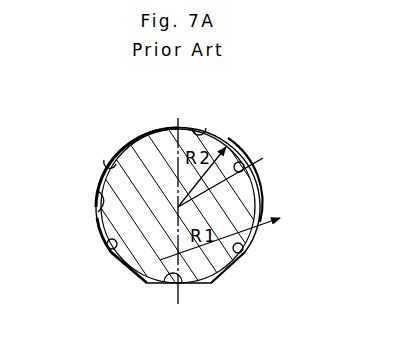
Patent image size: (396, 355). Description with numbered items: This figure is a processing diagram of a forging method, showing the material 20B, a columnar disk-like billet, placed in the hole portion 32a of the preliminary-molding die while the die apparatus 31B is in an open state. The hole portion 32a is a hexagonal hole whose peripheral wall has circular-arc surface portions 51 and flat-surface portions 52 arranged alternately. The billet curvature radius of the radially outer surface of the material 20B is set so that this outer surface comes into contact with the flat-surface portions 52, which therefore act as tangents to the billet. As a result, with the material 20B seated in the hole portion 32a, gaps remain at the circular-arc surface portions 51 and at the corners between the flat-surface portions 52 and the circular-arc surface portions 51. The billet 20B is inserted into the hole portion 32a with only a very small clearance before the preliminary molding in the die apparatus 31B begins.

The die apparatus 31B is at (273, 145).
The material 20B is at (144, 253).
The circular-arc surface portions 51 is at (200, 131).
The flat-surface portions 52 is at (112, 160).
The hole portion 32a is at (97, 188).